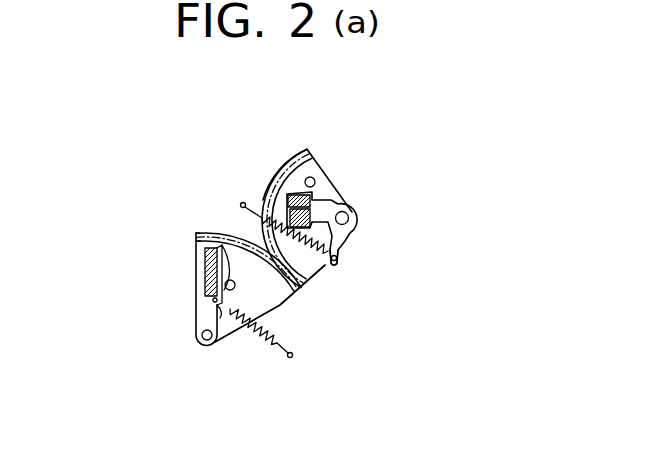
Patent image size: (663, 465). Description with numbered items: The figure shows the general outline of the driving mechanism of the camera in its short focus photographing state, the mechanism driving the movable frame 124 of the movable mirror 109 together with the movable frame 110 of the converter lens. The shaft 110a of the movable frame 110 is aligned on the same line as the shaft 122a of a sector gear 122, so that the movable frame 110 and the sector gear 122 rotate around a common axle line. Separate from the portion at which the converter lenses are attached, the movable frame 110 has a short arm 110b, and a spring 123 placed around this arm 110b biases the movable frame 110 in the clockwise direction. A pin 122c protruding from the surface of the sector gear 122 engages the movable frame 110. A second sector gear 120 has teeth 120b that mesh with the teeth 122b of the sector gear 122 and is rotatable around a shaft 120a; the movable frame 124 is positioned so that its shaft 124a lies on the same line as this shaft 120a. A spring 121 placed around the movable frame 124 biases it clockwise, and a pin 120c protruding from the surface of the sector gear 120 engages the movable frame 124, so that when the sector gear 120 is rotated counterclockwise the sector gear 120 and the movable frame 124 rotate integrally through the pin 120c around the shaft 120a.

The movable mirror 109 is at (205, 266).
The movable frame of the converter lens 110 is at (328, 202).
The shaft of the movable frame 110a is at (349, 220).
The short arm 110b is at (350, 236).
The sector gear 120 is at (214, 297).
The shaft of the sector gear 120a is at (172, 371).
The teeth 120b is at (196, 234).
The pin 120c is at (223, 200).
The spring 121 is at (272, 350).
The sector gear 122 is at (320, 278).
The shaft of the sector gear 122a is at (429, 232).
The teeth 122b is at (292, 157).
The pin 122c is at (316, 181).
The spring 123 is at (343, 250).
The movable frame of the movable mirror 124 is at (199, 313).
The shaft of the movable frame 124a is at (203, 347).